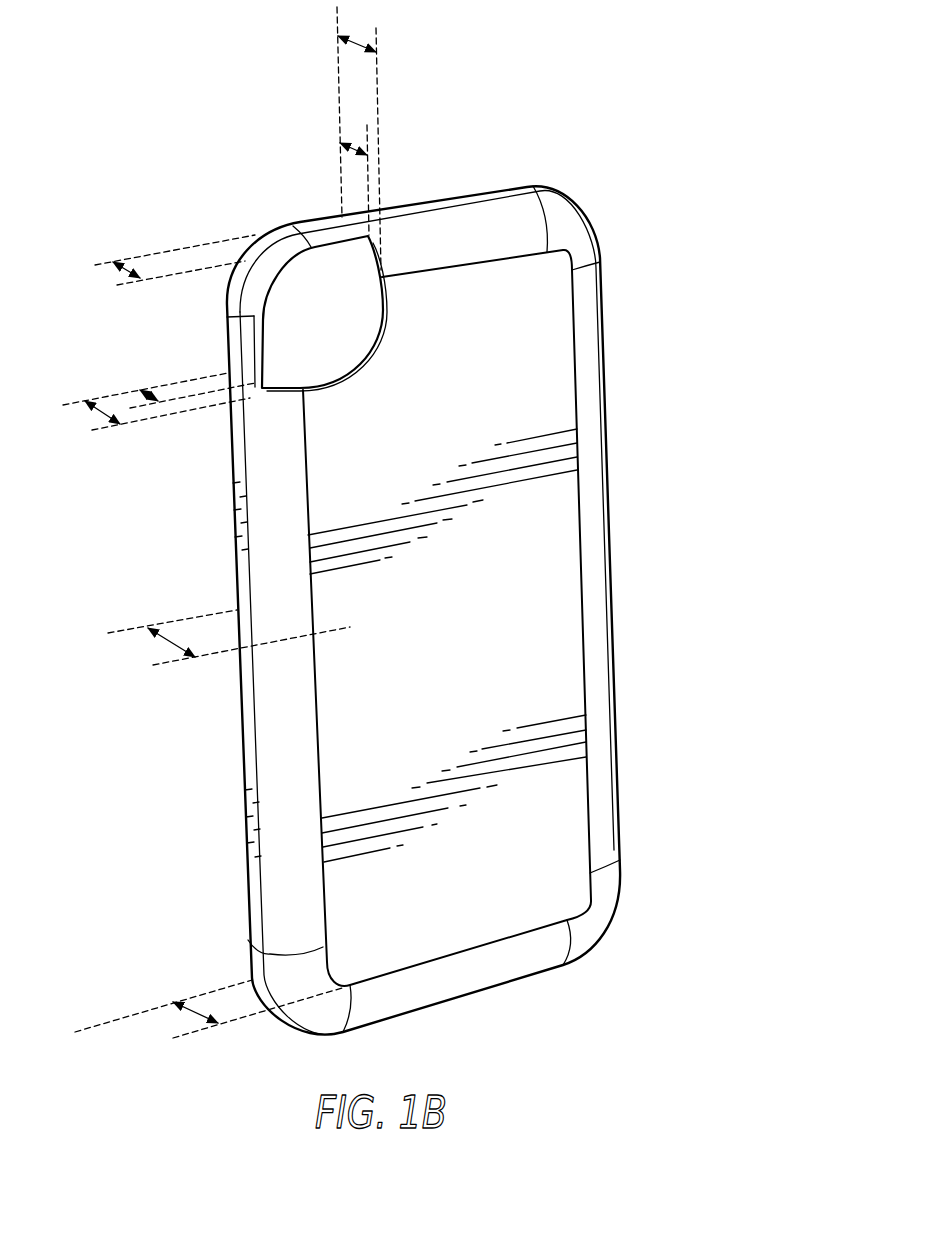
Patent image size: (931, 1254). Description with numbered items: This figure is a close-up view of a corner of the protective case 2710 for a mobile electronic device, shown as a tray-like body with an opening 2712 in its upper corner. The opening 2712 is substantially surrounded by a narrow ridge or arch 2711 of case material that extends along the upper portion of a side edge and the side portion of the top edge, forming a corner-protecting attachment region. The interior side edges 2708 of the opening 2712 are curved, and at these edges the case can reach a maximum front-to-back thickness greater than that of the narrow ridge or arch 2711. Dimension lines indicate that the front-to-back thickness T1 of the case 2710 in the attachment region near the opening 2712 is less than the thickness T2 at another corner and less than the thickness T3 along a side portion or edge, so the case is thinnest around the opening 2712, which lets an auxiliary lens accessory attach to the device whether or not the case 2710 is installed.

The case 2710 is at (372, 588).
The narrow ridge or arch 2711 is at (233, 288).
The opening 2712 is at (310, 347).
The interior side edges of the opening 2708 is at (311, 354).
The thickness in the attachment region T1 is at (353, 150).
The thickness in another corner T2 is at (188, 1012).
The thickness along a side portion or edge T3 is at (357, 45).